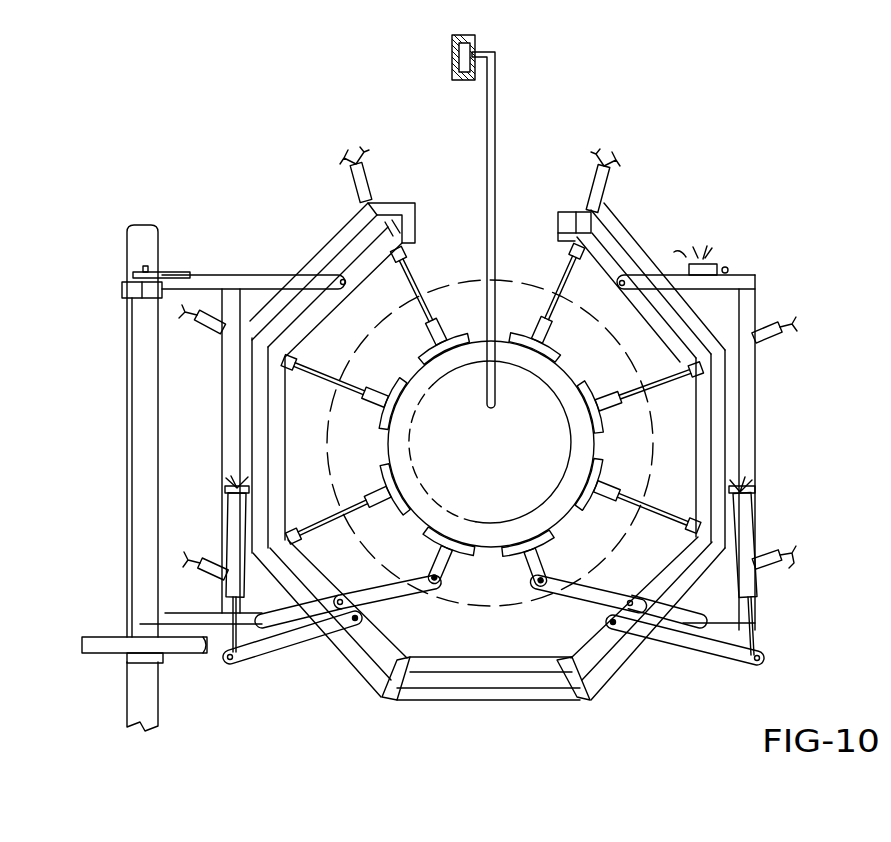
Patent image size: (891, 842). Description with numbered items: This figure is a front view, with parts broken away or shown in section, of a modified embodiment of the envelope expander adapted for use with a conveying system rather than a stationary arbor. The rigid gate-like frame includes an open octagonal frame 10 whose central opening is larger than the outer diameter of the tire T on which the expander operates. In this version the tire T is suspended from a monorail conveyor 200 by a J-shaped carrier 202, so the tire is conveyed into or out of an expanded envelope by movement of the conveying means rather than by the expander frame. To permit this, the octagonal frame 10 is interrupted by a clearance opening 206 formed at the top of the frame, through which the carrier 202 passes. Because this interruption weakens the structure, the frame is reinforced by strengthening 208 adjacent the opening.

The octagonal frame 10 is at (708, 191).
The monorail conveyor 200 is at (452, 60).
The J-shaped carrier 202 is at (496, 131).
The clearance opening 206 is at (449, 191).
The frame strengthening 208 is at (322, 252).
The tire T is at (472, 287).